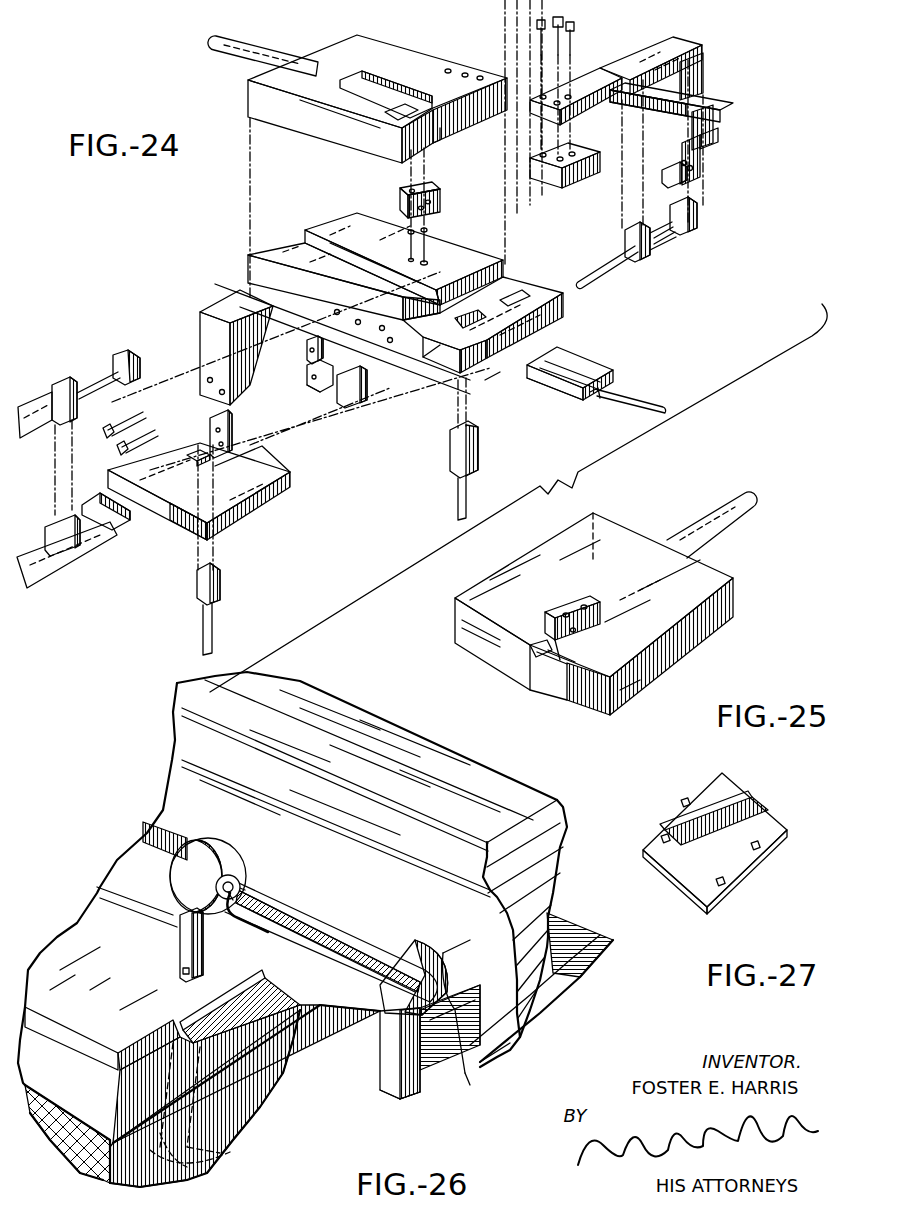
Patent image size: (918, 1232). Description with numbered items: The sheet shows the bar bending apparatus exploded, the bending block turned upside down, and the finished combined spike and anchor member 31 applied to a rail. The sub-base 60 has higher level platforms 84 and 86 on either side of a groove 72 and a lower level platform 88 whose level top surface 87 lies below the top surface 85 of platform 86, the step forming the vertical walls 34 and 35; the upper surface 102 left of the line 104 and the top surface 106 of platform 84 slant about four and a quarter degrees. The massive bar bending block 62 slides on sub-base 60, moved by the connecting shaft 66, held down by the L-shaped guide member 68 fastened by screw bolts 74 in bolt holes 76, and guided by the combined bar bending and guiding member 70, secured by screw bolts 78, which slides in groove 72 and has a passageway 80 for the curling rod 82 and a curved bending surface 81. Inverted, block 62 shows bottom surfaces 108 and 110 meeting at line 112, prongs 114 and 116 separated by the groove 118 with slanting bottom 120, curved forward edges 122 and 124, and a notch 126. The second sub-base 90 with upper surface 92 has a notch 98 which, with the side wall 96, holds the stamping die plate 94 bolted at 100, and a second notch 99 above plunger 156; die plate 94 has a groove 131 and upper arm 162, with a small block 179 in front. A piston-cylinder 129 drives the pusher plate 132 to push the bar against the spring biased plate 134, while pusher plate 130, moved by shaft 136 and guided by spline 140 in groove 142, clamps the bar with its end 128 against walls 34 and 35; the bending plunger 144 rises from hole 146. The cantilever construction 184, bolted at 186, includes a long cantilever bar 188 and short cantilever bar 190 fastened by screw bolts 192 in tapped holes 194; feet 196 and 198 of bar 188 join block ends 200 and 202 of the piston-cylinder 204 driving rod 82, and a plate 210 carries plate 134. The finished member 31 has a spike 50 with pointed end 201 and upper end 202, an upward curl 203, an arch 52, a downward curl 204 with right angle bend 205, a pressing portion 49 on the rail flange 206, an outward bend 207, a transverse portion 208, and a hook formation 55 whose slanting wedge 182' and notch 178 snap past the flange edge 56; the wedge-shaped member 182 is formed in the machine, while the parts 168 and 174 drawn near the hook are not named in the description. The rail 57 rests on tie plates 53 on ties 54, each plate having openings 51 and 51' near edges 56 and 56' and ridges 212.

In FIG. 26, the combined spike and anchor member 31 is at (140, 938).
In FIG. 24, the vertical wall 34 is at (418, 318).
In FIG. 24, the vertical wall 35 is at (475, 270).
In FIG. 26, the rail flange pressing portion 49 is at (355, 948).
In FIG. 26, the spike portion 50 is at (215, 1045).
In FIG. 27, the opening 51 is at (712, 847).
In FIG. 26, the opening 51 is at (153, 971).
In FIG. 27, the opening 51' is at (701, 854).
In FIG. 26, the vertical arch 52 is at (180, 872).
In FIG. 27, the tie plate 53 is at (765, 815).
In FIG. 26, the tie plate 53 is at (115, 1050).
In FIG. 26, the tie 54 is at (308, 1060).
In FIG. 26, the hook portion 55 is at (408, 1098).
In FIG. 26, the rail flange edge 56 is at (460, 1036).
In FIG. 26, the rail flange edge 56' is at (569, 991).
In FIG. 26, the rail 57 is at (560, 1003).
In FIG. 24, the sub-base 60 is at (335, 208).
In FIG. 24, the bar bending block 62 is at (243, 121).
In FIG. 25, the bar bending block 62 is at (750, 567).
In FIG. 24, the connecting shaft 66 is at (246, 47).
In FIG. 25, the connecting shaft 66 is at (722, 522).
In FIG. 24, the L-shaped guide member 68 is at (205, 322).
In FIG. 24, the combined bar bending and guiding member 70 is at (403, 193).
In FIG. 25, the combined bar bending and guiding member 70 is at (566, 612).
In FIG. 24, the groove 72 is at (347, 252).
In FIG. 24, the screw bolts 74 is at (127, 425).
In FIG. 24, the bolt holes 76 is at (334, 312).
In FIG. 24, the screw bolts 78 is at (426, 248).
In FIG. 25, the screw bolts 78 is at (580, 604).
In FIG. 24, the horizontal hole 80 is at (419, 207).
In FIG. 25, the horizontal hole 80 is at (577, 630).
In FIG. 24, the curved bar bending surface 81 is at (440, 200).
In FIG. 25, the curved bar bending surface 81 is at (552, 670).
In FIG. 24, the bar curling pin 82 is at (595, 282).
In FIG. 24, the higher level platform 84 is at (270, 257).
In FIG. 24, the top surface 85 is at (398, 262).
In FIG. 24, the higher level platform 86 is at (333, 228).
In FIG. 24, the level top surface 87 is at (525, 292).
In FIG. 24, the lower level platform 88 is at (548, 315).
In FIG. 24, the second sub-base 90 is at (260, 507).
In FIG. 24, the upper surface 92 is at (185, 510).
In FIG. 24, the stamping die plate 94 is at (348, 395).
In FIG. 24, the side wall 96 is at (402, 348).
In FIG. 24, the notch 98 is at (255, 462).
In FIG. 24, the second notch 99 is at (190, 455).
In FIG. 24, the bolts 100 is at (310, 378).
In FIG. 24, the upper surface 102 is at (440, 342).
In FIG. 24, the line 104 is at (473, 317).
In FIG. 24, the top surface 106 is at (353, 287).
In FIG. 25, the bottom surface 108 is at (512, 568).
In FIG. 25, the bottom surface 110 is at (665, 650).
In FIG. 25, the line 112 is at (625, 600).
In FIG. 24, the prong 114 is at (367, 117).
In FIG. 25, the prong 114 is at (590, 702).
In FIG. 24, the prong 116 is at (472, 82).
In FIG. 25, the prong 116 is at (485, 648).
In FIG. 24, the groove 118 is at (402, 92).
In FIG. 25, the groove 118 is at (556, 690).
In FIG. 24, the slanting bottom 120 is at (361, 78).
In FIG. 24, the forward lower edge 122 is at (412, 148).
In FIG. 25, the forward lower edge 122 is at (572, 674).
In FIG. 24, the forward lower edge 124 is at (462, 118).
In FIG. 25, the forward lower edge 124 is at (462, 620).
In FIG. 24, the notch 126 is at (438, 128).
In FIG. 25, the notch 126 is at (540, 658).
In FIG. 24, the pusher end 128 is at (540, 378).
In FIG. 24, the piston-cylinder 129 is at (37, 403).
In FIG. 24, the pusher plate 130 is at (590, 368).
In FIG. 24, the groove 131 is at (320, 388).
In FIG. 24, the longitudinal pusher plate 132 is at (117, 362).
In FIG. 24, the spring biased plate 134 is at (690, 182).
In FIG. 24, the shaft 136 is at (663, 404).
In FIG. 24, the downward spline 140 is at (598, 400).
In FIG. 24, the groove 142 is at (487, 380).
In FIG. 24, the upward bending plunger 144 is at (480, 465).
In FIG. 24, the hole 146 is at (530, 298).
In FIG. 24, the upwardly reciprocable plunger 156 is at (222, 578).
In FIG. 24, the upper arm 162 is at (305, 345).
In FIG. 26, the block bottom 168 is at (395, 1090).
In FIG. 26, the block 174 is at (380, 1050).
In FIG. 26, the notch 178 is at (440, 1030).
In FIG. 24, the small block 179 is at (233, 432).
In FIG. 24, the wedge-shaped member 182 is at (343, 139).
In FIG. 25, the wedge-shaped member 182 is at (648, 689).
In FIG. 26, the slanting wedge portion 182' is at (469, 1102).
In FIG. 24, the cantilever construction 184 is at (718, 152).
In FIG. 24, the bolts 186 is at (580, 80).
In FIG. 24, the long cantilever bar 188 is at (648, 55).
In FIG. 24, the short cantilever bar 190 is at (578, 152).
In FIG. 24, the screw bolts 192 is at (582, 38).
In FIG. 24, the tapped holes 194 is at (447, 70).
In FIG. 24, the foot 196 is at (625, 100).
In FIG. 24, the foot 198 is at (698, 70).
In FIG. 24, the block end 200 is at (650, 258).
In FIG. 26, the pointed spike end 201 is at (232, 1152).
In FIG. 24, the block end / upper spike end 202 is at (694, 228).
In FIG. 26, the block end / upper spike end 202 is at (180, 944).
In FIG. 26, the upward curl portion 203 is at (232, 905).
In FIG. 24, the piston-cylinder / downward curl portion 204 is at (672, 232).
In FIG. 26, the piston-cylinder / downward curl portion 204 is at (238, 880).
In FIG. 26, the vertical right angle bend 205 is at (240, 895).
In FIG. 26, the rail flange 206 is at (510, 1043).
In FIG. 26, the outward horizontal right angle bend 207 is at (445, 955).
In FIG. 26, the transverse rail flange pressing portion 208 is at (400, 995).
In FIG. 24, the plate 210 is at (708, 102).
In FIG. 27, the ridges 212 is at (710, 858).
In FIG. 26, the ridges 212 is at (272, 998).